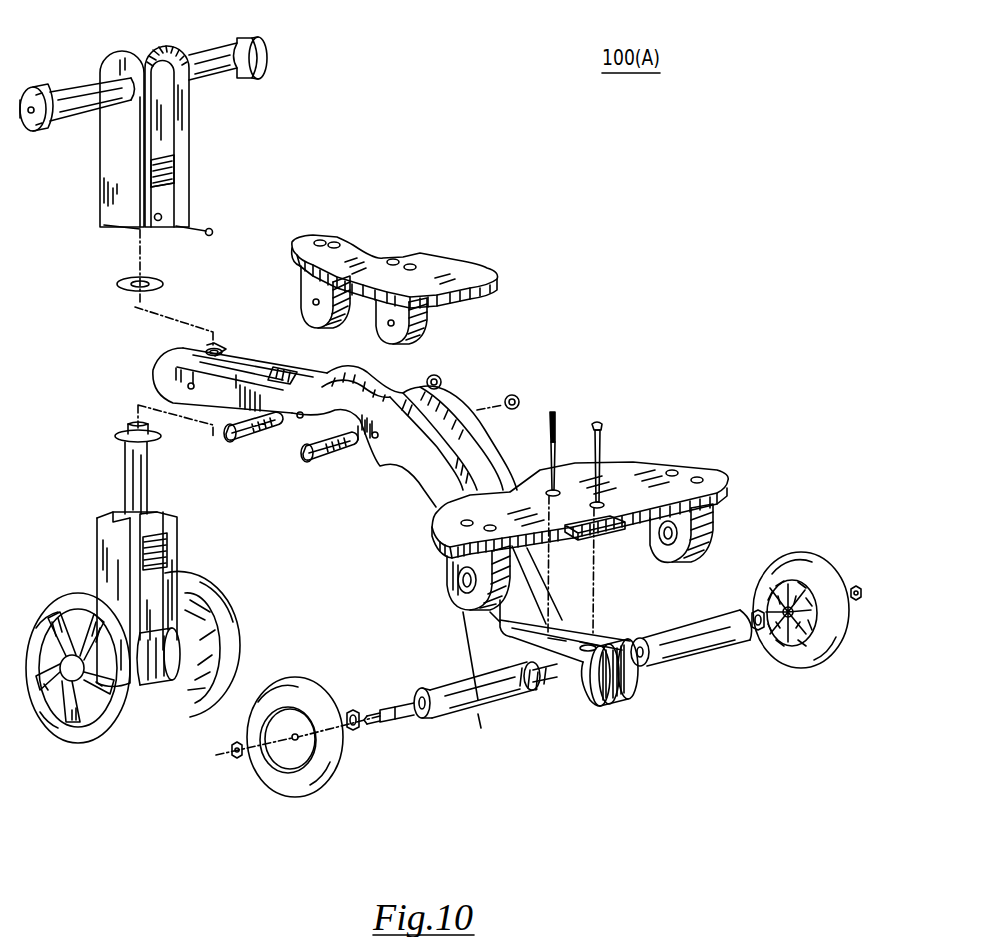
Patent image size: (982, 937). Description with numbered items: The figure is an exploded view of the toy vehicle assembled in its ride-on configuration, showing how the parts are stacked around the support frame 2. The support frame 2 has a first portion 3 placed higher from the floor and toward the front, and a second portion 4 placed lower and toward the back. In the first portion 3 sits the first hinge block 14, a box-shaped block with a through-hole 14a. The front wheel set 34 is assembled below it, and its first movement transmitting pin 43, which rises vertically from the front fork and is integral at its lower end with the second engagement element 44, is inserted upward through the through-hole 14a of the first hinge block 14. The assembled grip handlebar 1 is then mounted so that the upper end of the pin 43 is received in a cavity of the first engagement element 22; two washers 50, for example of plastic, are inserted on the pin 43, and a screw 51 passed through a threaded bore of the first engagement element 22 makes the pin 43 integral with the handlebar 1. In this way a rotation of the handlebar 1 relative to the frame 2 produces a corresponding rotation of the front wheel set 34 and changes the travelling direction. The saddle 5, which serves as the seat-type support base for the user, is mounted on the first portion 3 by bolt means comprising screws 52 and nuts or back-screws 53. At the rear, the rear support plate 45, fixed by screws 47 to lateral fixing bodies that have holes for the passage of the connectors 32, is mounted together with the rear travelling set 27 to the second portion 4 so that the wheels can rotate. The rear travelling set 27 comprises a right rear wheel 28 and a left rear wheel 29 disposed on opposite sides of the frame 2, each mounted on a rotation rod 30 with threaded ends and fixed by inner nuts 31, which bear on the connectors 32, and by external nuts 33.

The grip handlebar 1 is at (117, 57).
The first engagement element 22 is at (168, 174).
The screw 51 is at (208, 229).
The washers 50 is at (118, 284).
The saddle 5 is at (455, 258).
The first hinge block 14 is at (250, 365).
The through-hole 14a is at (207, 345).
The first portion 3 is at (218, 348).
The screws 52 is at (250, 442).
The nuts or back-screws 53 is at (446, 382).
The support frame 2 is at (484, 461).
The rear support plate 45 is at (638, 476).
The screws 47 is at (558, 414).
The second portion 4 is at (575, 694).
The rotation rod 30 is at (407, 700).
The connectors 32 is at (470, 697).
The inner nuts 31 is at (352, 710).
The left rear wheel 29 is at (318, 782).
The external nuts 33 is at (236, 758).
The right rear wheel 28 is at (806, 652).
The rear travelling set 27 is at (704, 581).
The front wheel set 34 is at (92, 576).
The second engagement element 44 is at (160, 537).
The first movement transmitting pin 43 is at (130, 468).